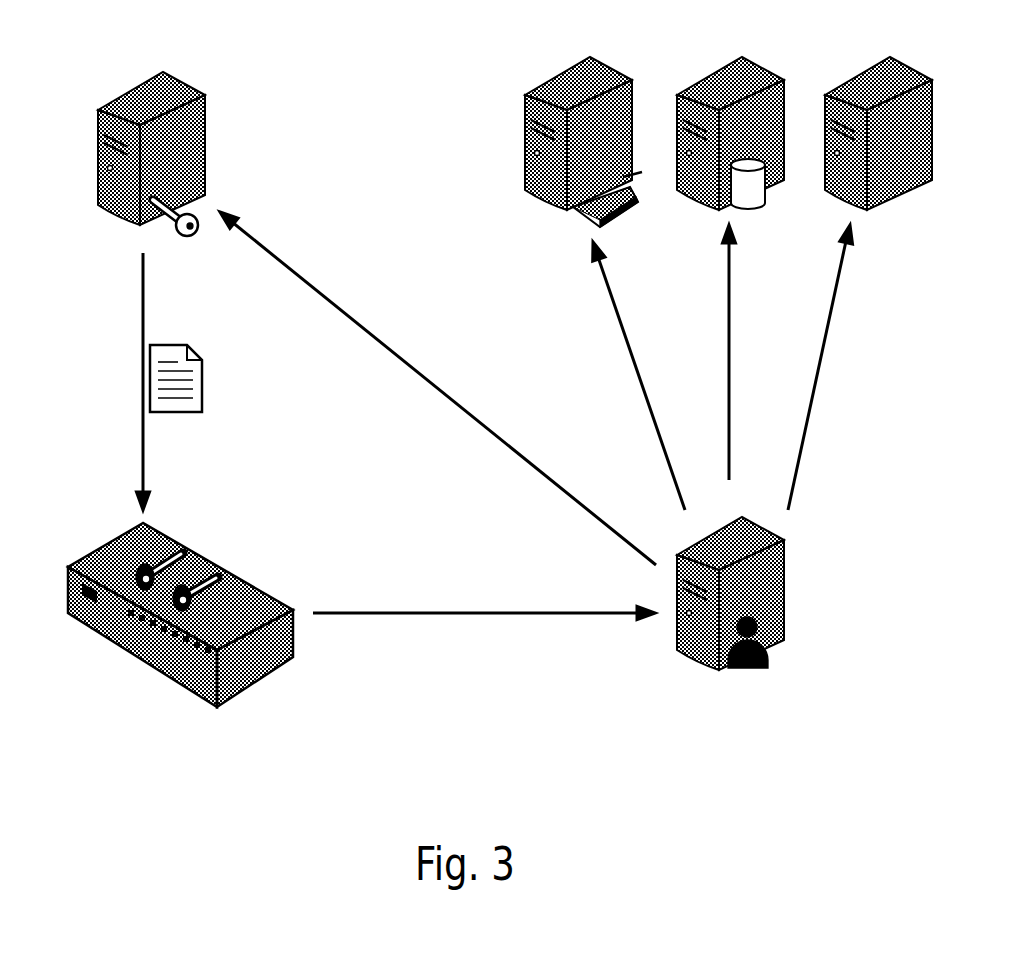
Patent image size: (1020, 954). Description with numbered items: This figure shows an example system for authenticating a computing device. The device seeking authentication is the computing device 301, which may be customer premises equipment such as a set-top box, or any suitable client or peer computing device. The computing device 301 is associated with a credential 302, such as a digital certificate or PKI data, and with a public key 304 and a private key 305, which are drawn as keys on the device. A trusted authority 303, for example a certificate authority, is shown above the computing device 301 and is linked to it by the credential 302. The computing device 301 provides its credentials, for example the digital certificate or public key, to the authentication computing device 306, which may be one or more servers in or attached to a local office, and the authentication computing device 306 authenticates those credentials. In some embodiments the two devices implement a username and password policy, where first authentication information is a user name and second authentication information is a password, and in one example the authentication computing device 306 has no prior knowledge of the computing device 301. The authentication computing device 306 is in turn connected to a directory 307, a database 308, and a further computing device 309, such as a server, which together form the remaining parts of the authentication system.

The computing device 301 is at (140, 663).
The credential 302 is at (205, 378).
The trusted authority 303 is at (133, 88).
The public key 304 is at (187, 545).
The private key 305 is at (225, 567).
The authentication computing device 306 is at (722, 670).
The directory 307 is at (553, 75).
The database 308 is at (713, 70).
The computing device 309 is at (862, 70).